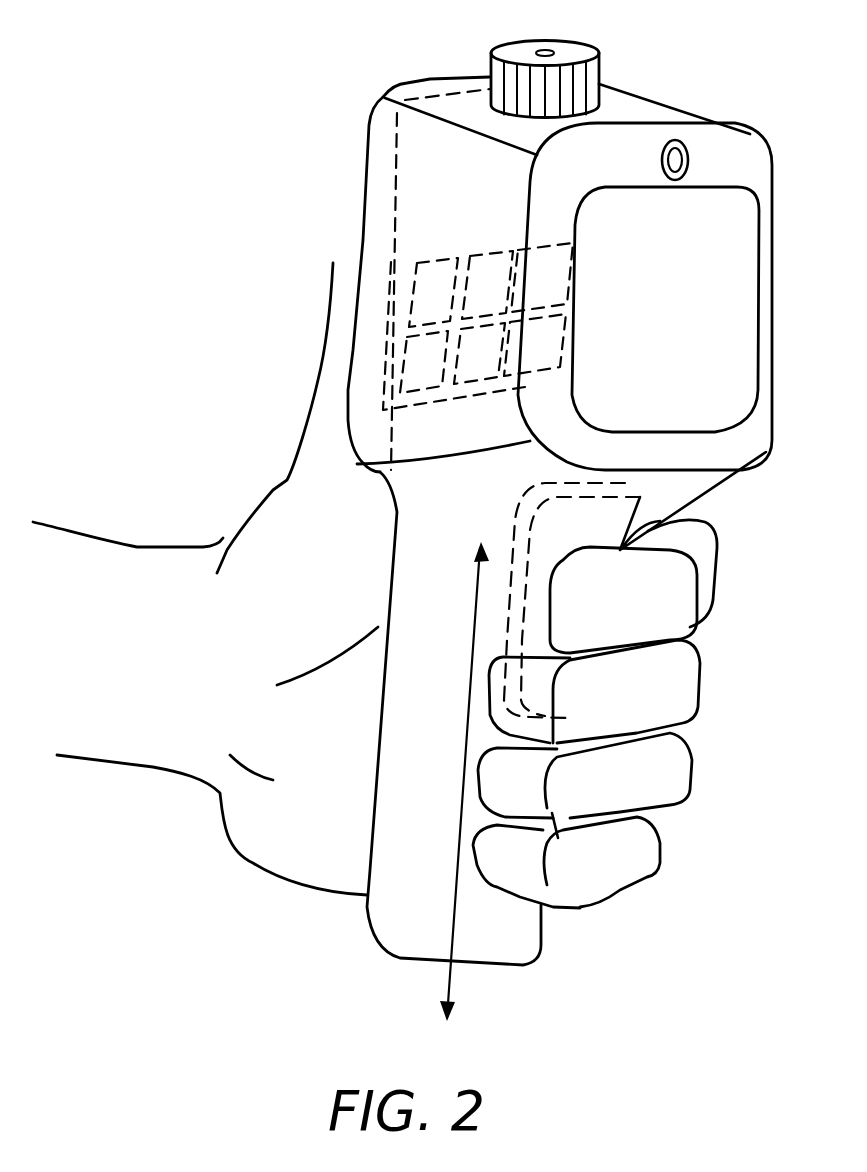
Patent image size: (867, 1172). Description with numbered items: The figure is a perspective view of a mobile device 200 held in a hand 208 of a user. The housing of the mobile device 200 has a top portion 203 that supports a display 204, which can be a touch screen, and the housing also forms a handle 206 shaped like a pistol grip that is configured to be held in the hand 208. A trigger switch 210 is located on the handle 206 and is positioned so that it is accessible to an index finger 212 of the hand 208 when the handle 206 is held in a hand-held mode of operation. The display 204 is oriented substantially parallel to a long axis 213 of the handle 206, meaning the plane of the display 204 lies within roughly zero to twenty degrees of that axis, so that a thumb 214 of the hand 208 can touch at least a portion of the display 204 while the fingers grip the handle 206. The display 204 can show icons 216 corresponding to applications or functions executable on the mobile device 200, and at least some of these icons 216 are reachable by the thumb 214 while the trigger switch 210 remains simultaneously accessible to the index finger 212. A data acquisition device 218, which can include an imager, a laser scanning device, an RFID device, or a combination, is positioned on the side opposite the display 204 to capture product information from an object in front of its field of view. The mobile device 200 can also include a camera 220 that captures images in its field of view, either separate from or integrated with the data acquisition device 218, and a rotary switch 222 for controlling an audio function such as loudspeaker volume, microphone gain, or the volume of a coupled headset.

The mobile device 200 is at (272, 97).
The top portion 203 is at (447, 77).
The display 204 is at (670, 93).
The handle 206 is at (451, 713).
The hand 208 is at (250, 513).
The trigger switch 210 is at (517, 517).
The index finger 212 is at (608, 615).
The long axis 213 is at (453, 880).
The thumb 214 is at (328, 303).
The icons 216 is at (500, 255).
The data acquisition device 218 is at (698, 312).
The camera 220 is at (687, 171).
The rotary switch 222 is at (573, 43).